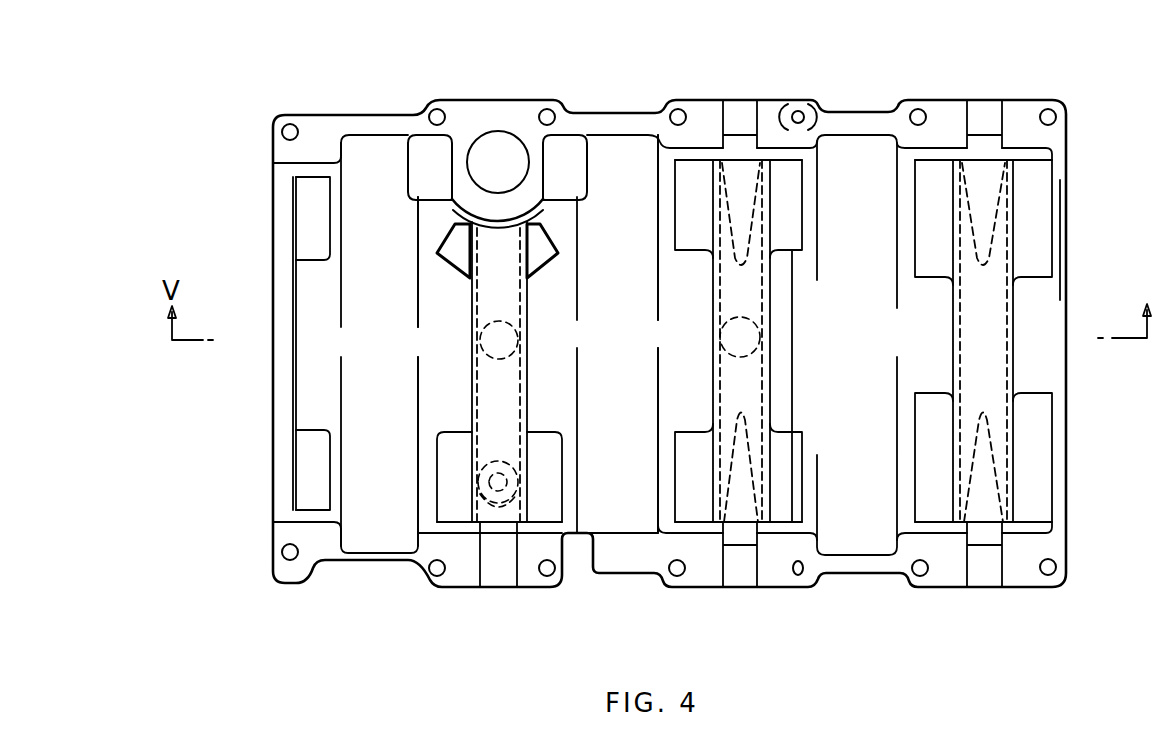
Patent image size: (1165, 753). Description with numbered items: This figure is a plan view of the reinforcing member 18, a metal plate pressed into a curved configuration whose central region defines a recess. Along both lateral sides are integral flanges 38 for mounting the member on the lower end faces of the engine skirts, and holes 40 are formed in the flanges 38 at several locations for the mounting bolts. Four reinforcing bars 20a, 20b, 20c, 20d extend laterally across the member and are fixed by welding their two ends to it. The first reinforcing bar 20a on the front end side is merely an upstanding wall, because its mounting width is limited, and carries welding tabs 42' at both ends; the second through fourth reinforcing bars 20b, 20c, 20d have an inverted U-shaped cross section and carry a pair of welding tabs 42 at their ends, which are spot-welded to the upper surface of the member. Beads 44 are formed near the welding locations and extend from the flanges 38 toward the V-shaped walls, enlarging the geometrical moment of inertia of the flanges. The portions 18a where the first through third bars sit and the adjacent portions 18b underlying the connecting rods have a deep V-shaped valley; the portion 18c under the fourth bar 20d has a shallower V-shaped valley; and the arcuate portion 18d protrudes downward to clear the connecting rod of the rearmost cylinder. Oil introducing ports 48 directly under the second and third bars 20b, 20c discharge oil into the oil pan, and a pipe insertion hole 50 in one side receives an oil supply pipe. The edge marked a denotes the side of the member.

The reinforcing member 18 is at (334, 113).
The portions at which the first through third reinforcing bars are disposed 18a is at (432, 283).
The portions underlying the connecting rods 18b is at (372, 148).
The portion at which the fourth reinforcing bar is disposed 18c is at (1060, 227).
The downwardly protruding portion 18d is at (852, 145).
The first reinforcing bar 20a is at (297, 396).
The second reinforcing bar 20b is at (540, 405).
The third reinforcing bar 20c is at (772, 392).
The fourth reinforcing bar 20d is at (1013, 362).
The flange 38 is at (770, 117).
The hole 40 is at (437, 115).
The welding tab 42 is at (788, 338).
The welding tab 42' is at (349, 343).
The bead 44 is at (740, 108).
The oil introducing port 48 is at (518, 333).
The pipe insertion hole 50 is at (503, 134).
The flange edge a is at (280, 212).